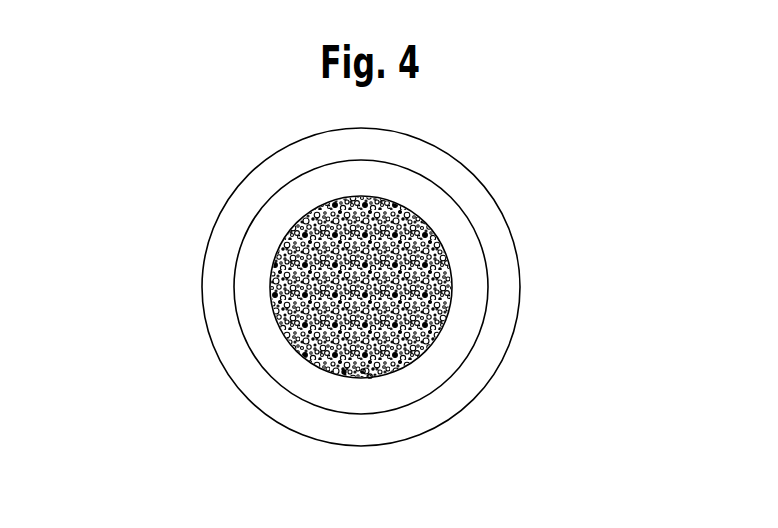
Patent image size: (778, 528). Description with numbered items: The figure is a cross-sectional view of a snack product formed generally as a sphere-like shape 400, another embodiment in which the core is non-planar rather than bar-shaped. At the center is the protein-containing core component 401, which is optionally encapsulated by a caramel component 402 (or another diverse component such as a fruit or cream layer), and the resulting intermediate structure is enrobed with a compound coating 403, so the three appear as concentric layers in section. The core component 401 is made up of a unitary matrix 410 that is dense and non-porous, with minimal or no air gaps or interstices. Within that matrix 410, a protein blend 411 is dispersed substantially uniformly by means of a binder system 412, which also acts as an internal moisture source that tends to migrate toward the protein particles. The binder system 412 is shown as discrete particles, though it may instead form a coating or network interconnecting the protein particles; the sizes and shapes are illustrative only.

The sphere-like shape 400 is at (149, 259).
The protein-containing core component 401 is at (297, 355).
The caramel component 402 is at (280, 225).
The compound coating 403 is at (282, 166).
The unitary matrix 410 is at (372, 380).
The protein blend 411 is at (362, 374).
The binder system 412 is at (342, 376).